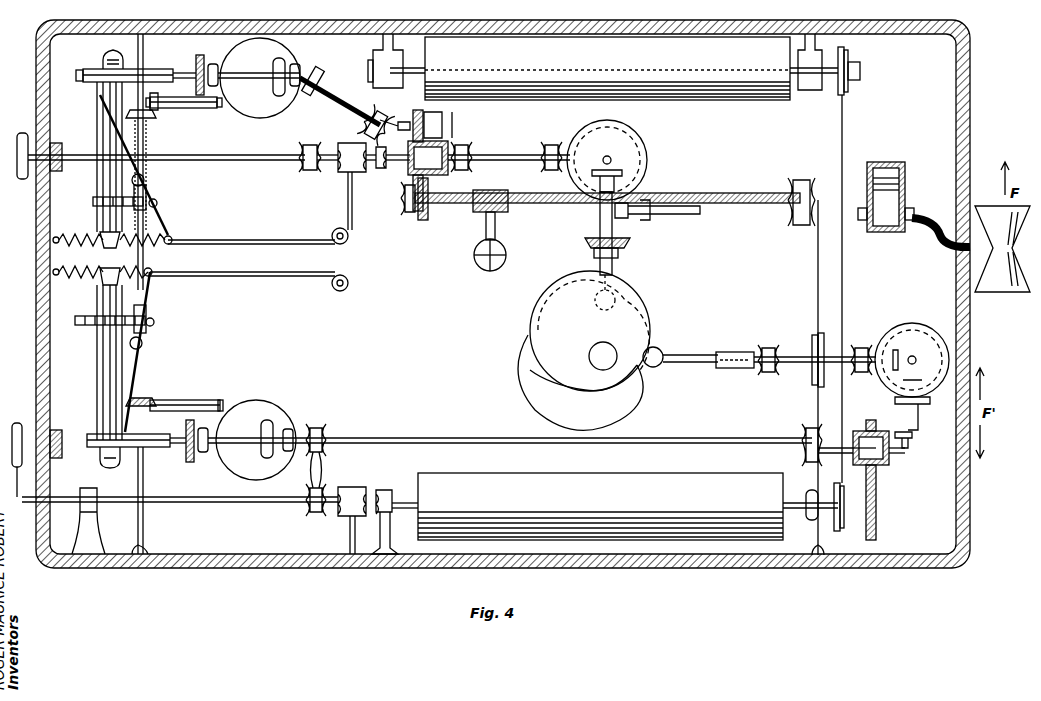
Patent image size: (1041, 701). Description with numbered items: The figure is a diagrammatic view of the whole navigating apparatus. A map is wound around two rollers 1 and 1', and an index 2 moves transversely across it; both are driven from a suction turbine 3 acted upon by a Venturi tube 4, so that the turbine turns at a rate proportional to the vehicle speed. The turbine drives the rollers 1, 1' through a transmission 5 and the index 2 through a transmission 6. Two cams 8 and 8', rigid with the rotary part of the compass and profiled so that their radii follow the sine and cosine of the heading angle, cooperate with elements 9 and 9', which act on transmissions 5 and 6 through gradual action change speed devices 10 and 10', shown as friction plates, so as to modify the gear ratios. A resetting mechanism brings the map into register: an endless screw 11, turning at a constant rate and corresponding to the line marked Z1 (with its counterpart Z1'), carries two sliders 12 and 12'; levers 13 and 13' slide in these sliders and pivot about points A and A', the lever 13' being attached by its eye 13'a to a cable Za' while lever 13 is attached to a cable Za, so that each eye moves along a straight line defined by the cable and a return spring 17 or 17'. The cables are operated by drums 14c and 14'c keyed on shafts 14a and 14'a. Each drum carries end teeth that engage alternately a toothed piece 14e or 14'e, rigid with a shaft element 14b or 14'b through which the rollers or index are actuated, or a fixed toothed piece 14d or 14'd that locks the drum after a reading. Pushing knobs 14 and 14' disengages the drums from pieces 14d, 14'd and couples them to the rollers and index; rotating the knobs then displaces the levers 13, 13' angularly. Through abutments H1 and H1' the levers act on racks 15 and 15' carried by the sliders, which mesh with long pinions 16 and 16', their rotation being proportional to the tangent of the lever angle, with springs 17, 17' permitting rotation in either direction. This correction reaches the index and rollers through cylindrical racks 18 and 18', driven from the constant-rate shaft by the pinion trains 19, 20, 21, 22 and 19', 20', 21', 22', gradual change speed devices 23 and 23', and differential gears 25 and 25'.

The roller 1 is at (631, 498).
The roller 1' is at (614, 83).
The index 2 is at (504, 250).
The suction turbine 3 is at (896, 182).
The Venturi tube 4 is at (988, 207).
The transmission 5 is at (812, 378).
The transmission 6 is at (568, 203).
The cam 8 is at (589, 382).
The cam 8' is at (601, 331).
The cam follower element 9 is at (680, 349).
The cam follower element 9' is at (624, 290).
The gradual action change speed device 10 is at (623, 160).
The gradual action change speed device 10' is at (913, 366).
The endless screw 11 is at (150, 268).
The slider 12 is at (155, 313).
The slider 12' is at (158, 196).
The lever 13 is at (151, 352).
The lever 13' is at (159, 168).
The eye 13'a is at (175, 240).
The knob 14 is at (32, 462).
The knob 14' is at (32, 145).
The shaft 14a is at (256, 505).
The shaft element 14b is at (410, 500).
The drum 14c is at (351, 535).
The fixed toothed piece 14d is at (340, 515).
The toothed piece 14e is at (380, 490).
The shaft 14'a is at (200, 152).
The shaft element 14'b is at (387, 179).
The drum 14'c is at (326, 201).
The fixed toothed piece 14'd is at (338, 173).
The toothed piece 14'e is at (380, 183).
The rack 15 is at (104, 334).
The rack 15' is at (102, 212).
The long pinion 16 is at (92, 362).
The long pinion 16' is at (92, 165).
The return spring 17 is at (100, 267).
The return spring 17' is at (109, 248).
The cylindrical rack 18 is at (117, 440).
The cylindrical rack 18' is at (120, 59).
The pinion 19 is at (152, 390).
The pinion 19' is at (171, 116).
The pinion 20 is at (161, 117).
The pinion 20' is at (185, 398).
The pinion 21 is at (192, 116).
The pinion 21' is at (219, 398).
The pinion 22 is at (192, 455).
The pinion 22' is at (199, 63).
The gradual change speed device 23 is at (269, 437).
The gradual change speed device 23' is at (306, 92).
The differential gear 25 is at (881, 471).
The differential gear 25' is at (433, 160).
The pivot point A is at (150, 343).
The pivot point A' is at (150, 176).
The abutment H1 is at (165, 323).
The abutment H1' is at (177, 205).
The line OZ1 Z1 is at (149, 500).
The upper rack rod Z1' is at (152, 162).
The cable Za is at (249, 277).
The cable Za' is at (258, 235).